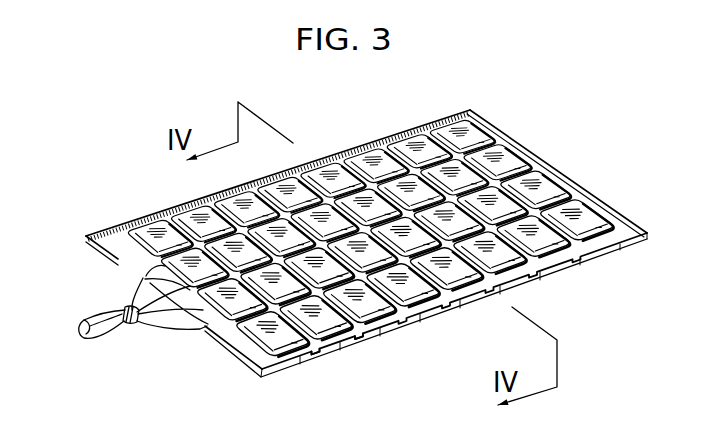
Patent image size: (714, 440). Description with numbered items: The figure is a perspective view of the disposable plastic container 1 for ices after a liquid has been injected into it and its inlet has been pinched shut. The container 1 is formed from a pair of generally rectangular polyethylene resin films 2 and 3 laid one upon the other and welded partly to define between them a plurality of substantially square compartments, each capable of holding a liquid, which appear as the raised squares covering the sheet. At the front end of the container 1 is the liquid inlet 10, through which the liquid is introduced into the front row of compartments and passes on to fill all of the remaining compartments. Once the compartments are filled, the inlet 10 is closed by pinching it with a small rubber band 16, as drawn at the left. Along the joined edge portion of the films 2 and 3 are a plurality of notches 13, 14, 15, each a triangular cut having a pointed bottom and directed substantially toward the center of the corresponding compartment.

The disposable plastic container 1 is at (128, 215).
The polyethylene resin film 2 is at (277, 365).
The polyethylene resin film 3 is at (257, 372).
The liquid inlet 10 is at (94, 322).
The notch 13 is at (320, 357).
The notch 14 is at (363, 342).
The notch 15 is at (203, 330).
The small rubber band 16 is at (137, 327).